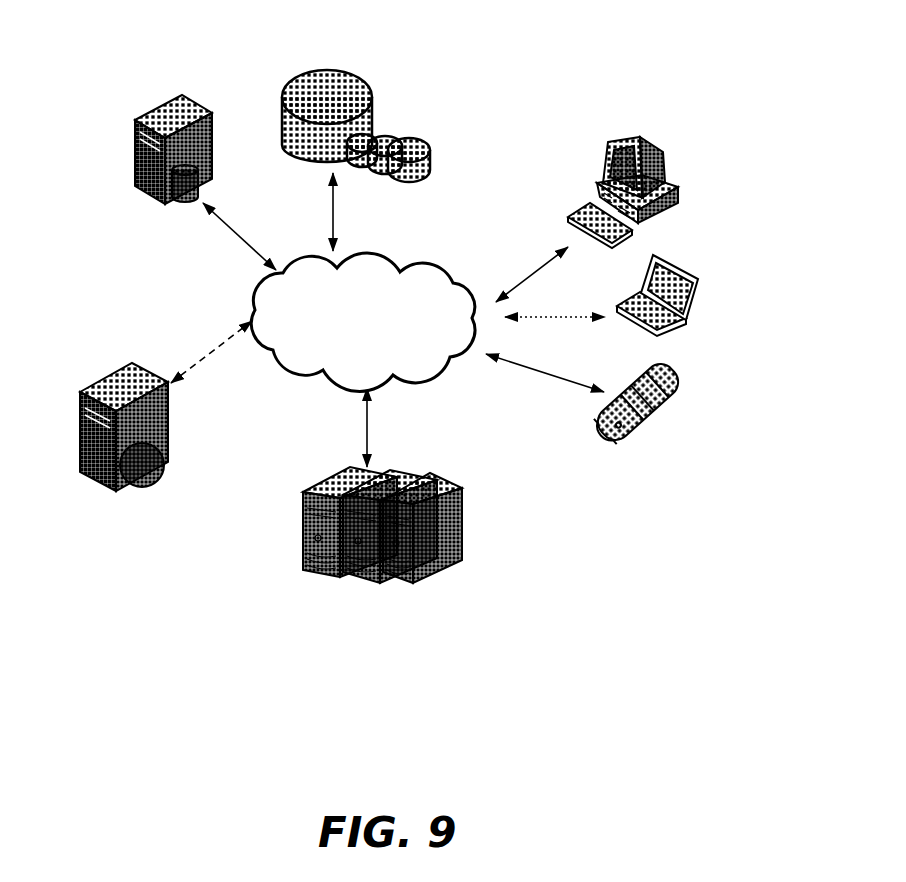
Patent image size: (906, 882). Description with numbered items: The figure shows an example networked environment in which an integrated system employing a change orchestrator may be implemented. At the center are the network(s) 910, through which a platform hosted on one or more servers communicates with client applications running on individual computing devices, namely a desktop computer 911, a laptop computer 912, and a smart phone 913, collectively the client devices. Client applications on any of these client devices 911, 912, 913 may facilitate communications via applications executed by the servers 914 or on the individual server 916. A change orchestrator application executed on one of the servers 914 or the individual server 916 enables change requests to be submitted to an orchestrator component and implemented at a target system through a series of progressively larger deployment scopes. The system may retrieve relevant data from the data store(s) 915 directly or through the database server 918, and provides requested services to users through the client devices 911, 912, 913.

The network(s) 910 is at (372, 244).
The desktop computer 911 is at (665, 126).
The laptop computer 912 is at (697, 253).
The smart phone 913 is at (669, 369).
The servers 914 is at (330, 472).
The data store(s) 915 is at (343, 49).
The individual server 916 is at (102, 374).
The database server 918 is at (170, 214).